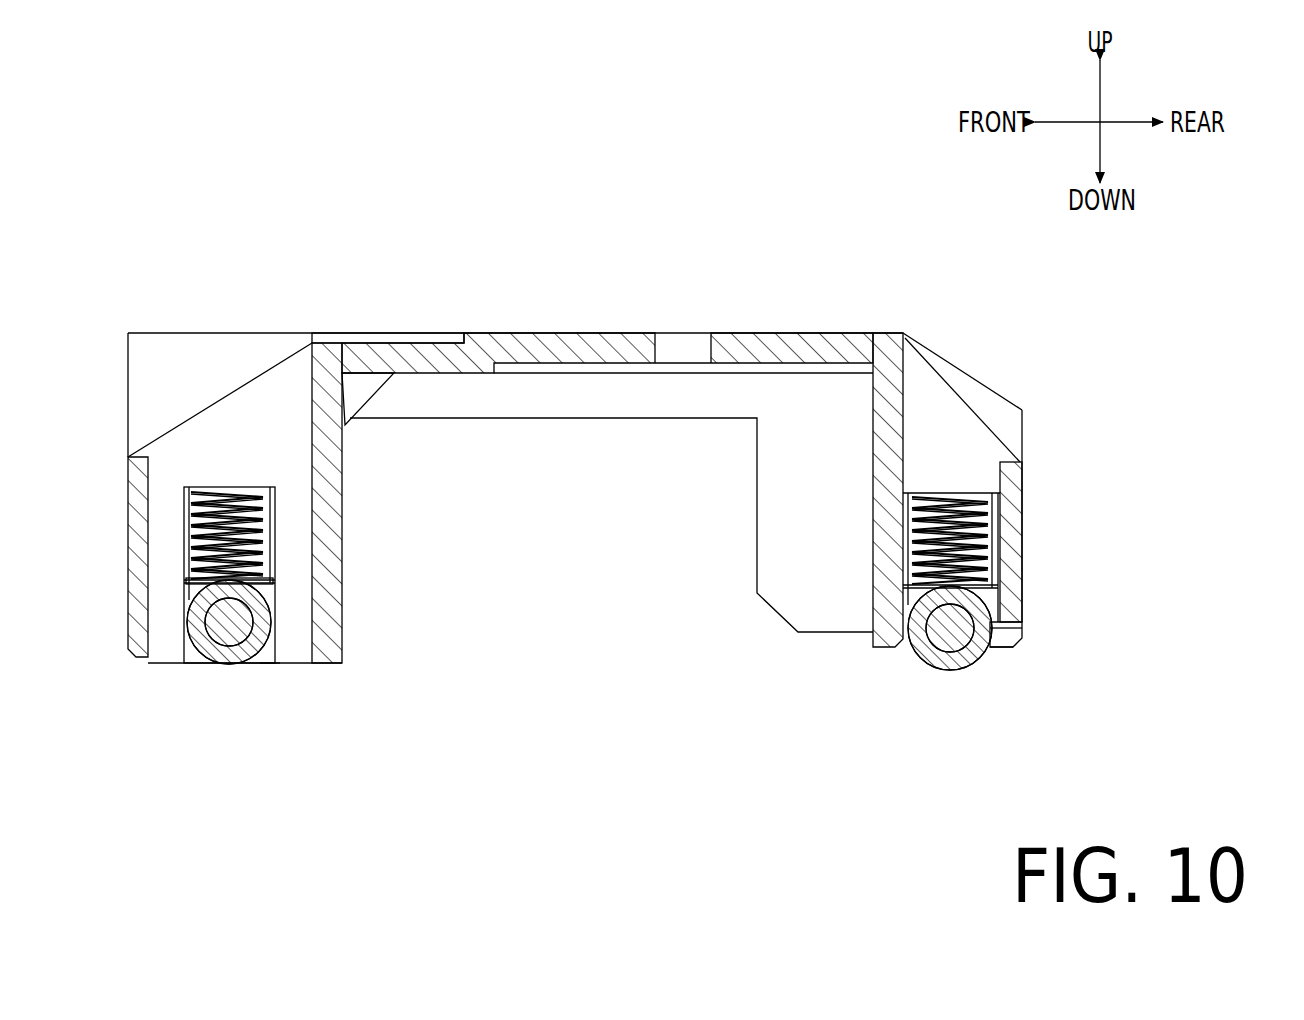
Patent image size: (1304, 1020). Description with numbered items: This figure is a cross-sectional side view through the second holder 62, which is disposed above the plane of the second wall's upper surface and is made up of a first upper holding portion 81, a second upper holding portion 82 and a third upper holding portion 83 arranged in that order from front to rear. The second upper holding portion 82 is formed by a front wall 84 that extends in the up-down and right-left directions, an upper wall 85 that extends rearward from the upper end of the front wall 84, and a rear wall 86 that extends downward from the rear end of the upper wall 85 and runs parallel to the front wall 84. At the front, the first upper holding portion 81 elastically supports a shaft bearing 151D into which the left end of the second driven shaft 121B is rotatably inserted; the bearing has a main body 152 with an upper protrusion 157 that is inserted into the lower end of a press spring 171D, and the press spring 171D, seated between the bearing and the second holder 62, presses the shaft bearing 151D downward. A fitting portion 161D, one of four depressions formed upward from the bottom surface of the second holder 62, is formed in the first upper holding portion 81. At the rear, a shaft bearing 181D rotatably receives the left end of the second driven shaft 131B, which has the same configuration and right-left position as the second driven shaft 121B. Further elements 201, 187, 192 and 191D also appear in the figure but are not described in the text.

The second holder 62 is at (213, 333).
The first upper holding portion 81 is at (271, 362).
The second upper holding portion 82 is at (620, 330).
The third upper holding portion 83 is at (978, 392).
The front wall 84 is at (330, 473).
The upper wall 85 is at (754, 355).
The rear wall 86 is at (883, 481).
The shaft bearing 151D is at (197, 592).
The press spring 171D is at (263, 527).
The upper protrusion 157 is at (263, 570).
The second driven shaft 121B is at (222, 623).
The main body 152 is at (217, 655).
The fitting portion 161D is at (271, 663).
The shaft bearing 181D is at (915, 597).
The rear spring holder wall 201 is at (993, 532).
The rear coil spring 187 is at (967, 580).
The second driven shaft 131B is at (952, 628).
The rear roller 192 is at (950, 663).
The rear roller lower position 191D is at (992, 648).